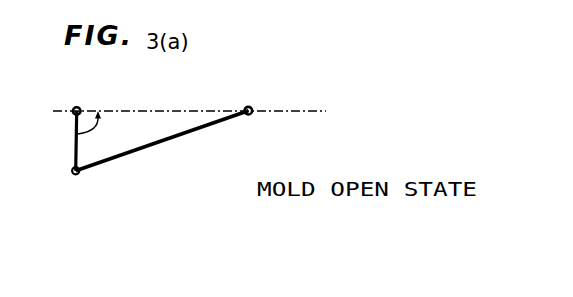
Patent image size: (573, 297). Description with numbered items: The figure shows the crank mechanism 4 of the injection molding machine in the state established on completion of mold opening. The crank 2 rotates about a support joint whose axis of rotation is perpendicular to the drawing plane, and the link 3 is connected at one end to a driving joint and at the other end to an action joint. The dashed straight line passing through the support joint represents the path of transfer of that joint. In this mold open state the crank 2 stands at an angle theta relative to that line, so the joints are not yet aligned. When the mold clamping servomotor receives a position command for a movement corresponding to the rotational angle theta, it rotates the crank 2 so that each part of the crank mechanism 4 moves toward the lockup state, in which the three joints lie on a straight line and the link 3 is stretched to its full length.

The crank 2 is at (75, 133).
The link 3 is at (168, 134).
The crank mechanism 4 is at (189, 185).